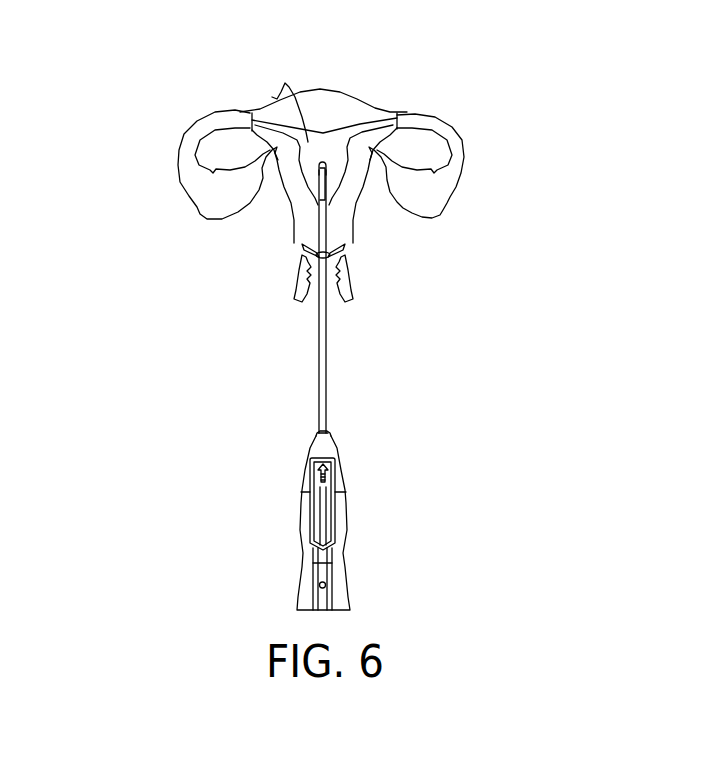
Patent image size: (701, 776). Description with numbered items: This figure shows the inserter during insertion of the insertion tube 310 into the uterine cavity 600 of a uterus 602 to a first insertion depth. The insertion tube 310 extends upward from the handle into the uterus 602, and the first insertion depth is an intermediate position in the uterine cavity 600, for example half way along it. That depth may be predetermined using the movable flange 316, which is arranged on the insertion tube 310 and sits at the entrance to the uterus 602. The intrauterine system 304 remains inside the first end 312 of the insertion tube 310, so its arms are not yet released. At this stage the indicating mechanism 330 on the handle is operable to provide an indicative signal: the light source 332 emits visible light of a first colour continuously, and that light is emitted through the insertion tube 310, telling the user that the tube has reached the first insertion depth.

The uterine cavity 600 is at (272, 97).
The uterus 602 is at (377, 107).
The intrauterine system 304 is at (327, 160).
The first end of the insertion tube 312 is at (326, 172).
The movable flange 316 is at (301, 255).
The insertion tube 310 is at (330, 338).
The light source 332 is at (311, 432).
The indicating mechanism 330 is at (338, 435).